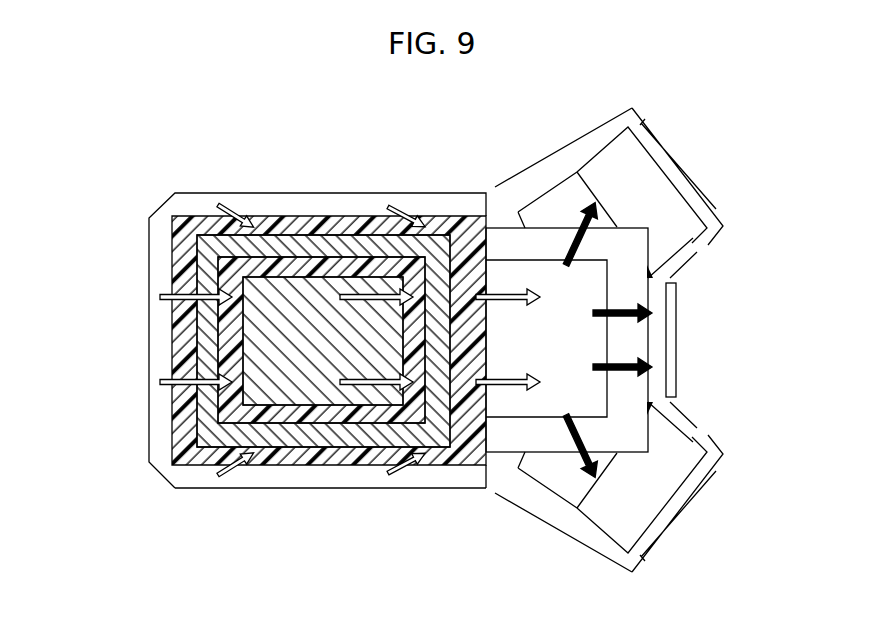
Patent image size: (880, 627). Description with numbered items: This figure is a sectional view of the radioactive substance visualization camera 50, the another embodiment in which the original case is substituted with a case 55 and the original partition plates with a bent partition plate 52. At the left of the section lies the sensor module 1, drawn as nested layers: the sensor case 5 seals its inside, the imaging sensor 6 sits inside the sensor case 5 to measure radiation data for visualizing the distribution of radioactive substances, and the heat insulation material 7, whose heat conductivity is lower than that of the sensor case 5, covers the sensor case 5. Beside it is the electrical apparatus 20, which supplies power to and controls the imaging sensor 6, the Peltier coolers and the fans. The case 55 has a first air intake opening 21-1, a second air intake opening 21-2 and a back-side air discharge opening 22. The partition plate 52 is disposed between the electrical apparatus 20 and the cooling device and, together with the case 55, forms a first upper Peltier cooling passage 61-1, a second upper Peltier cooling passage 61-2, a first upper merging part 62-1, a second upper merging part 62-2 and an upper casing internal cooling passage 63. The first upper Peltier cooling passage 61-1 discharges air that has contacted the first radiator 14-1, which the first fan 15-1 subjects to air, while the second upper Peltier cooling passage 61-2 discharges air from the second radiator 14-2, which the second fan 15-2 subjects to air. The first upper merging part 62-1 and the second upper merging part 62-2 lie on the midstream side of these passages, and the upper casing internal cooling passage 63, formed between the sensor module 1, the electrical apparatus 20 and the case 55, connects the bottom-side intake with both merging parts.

The sensor module 1 is at (372, 207).
The sensor case 5 is at (215, 245).
The imaging sensor 6 is at (297, 290).
The heat insulation material 7 is at (325, 227).
The electrical apparatus 20 is at (507, 240).
The back-side air discharge opening 22 is at (680, 298).
The radioactive substance visualization camera 50 is at (409, 152).
The partition plate 52 is at (632, 227).
The case 55 is at (149, 266).
The upper casing internal cooling passage 63 is at (297, 488).
The first radiator 14-1 is at (532, 205).
The second radiator 14-2 is at (530, 478).
The first fan 15-1 is at (613, 140).
The second fan 15-2 is at (600, 533).
The first air intake opening 21-1 is at (669, 144).
The second air intake opening 21-2 is at (690, 512).
The first upper Peltier cooling passage 61-1 is at (582, 240).
The second upper Peltier cooling passage 61-2 is at (582, 440).
The first upper merging part 62-1 is at (572, 200).
The second upper merging part 62-2 is at (562, 486).